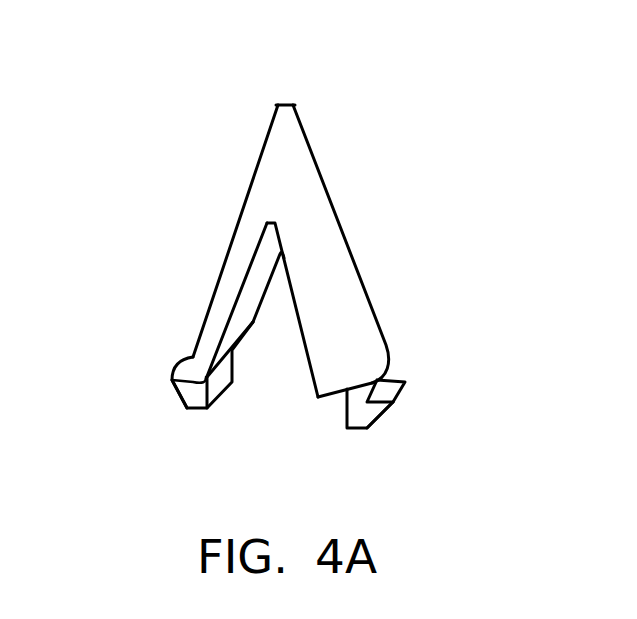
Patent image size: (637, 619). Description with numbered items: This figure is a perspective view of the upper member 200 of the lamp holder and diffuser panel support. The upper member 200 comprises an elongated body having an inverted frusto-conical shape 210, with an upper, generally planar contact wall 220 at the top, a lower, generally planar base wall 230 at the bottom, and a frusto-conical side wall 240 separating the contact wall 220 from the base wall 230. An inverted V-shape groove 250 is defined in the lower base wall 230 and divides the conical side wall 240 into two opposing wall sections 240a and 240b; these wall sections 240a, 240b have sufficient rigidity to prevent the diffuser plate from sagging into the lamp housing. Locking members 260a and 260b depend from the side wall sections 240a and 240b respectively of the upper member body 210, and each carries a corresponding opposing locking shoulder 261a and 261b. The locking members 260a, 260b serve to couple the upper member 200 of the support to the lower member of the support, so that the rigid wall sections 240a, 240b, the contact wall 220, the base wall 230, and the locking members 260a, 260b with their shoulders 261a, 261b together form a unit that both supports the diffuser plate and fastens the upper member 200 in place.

The upper member 200 is at (230, 155).
The inverted frusto-conical shape 210 is at (242, 208).
The upper contact wall 220 is at (285, 104).
The lower base wall 230 is at (337, 398).
The frusto-conical side wall 240 is at (322, 205).
The side wall section 240a is at (223, 263).
The side wall section 240b is at (353, 263).
The inverted V-shape groove 250 is at (280, 365).
The locking member 260a is at (200, 392).
The locking member 260b is at (382, 389).
The locking shoulder 261a is at (176, 386).
The locking shoulder 261b is at (382, 418).